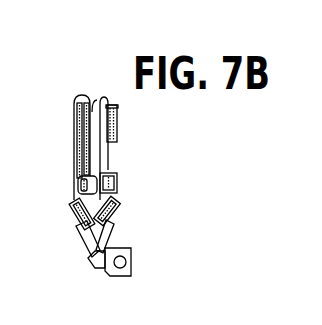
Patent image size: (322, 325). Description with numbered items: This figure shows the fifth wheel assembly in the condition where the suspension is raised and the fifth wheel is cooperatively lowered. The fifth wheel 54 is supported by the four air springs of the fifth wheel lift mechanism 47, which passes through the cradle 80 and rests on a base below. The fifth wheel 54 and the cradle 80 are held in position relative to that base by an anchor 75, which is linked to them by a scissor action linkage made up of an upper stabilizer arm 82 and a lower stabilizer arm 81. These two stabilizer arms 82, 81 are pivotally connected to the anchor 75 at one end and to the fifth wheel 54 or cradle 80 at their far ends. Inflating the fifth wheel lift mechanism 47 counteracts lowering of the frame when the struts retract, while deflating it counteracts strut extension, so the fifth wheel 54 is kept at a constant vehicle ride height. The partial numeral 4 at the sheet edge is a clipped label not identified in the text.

The partial numeral (clipped) 4 is at (4, 56).
The fifth wheel lift mechanism 47 is at (99, 113).
The fifth wheel 54 is at (78, 140).
The cradle 80 is at (103, 162).
The lower stabilizer arm 81 is at (103, 232).
The upper stabilizer arm 82 is at (88, 232).
The anchor 75 is at (132, 250).